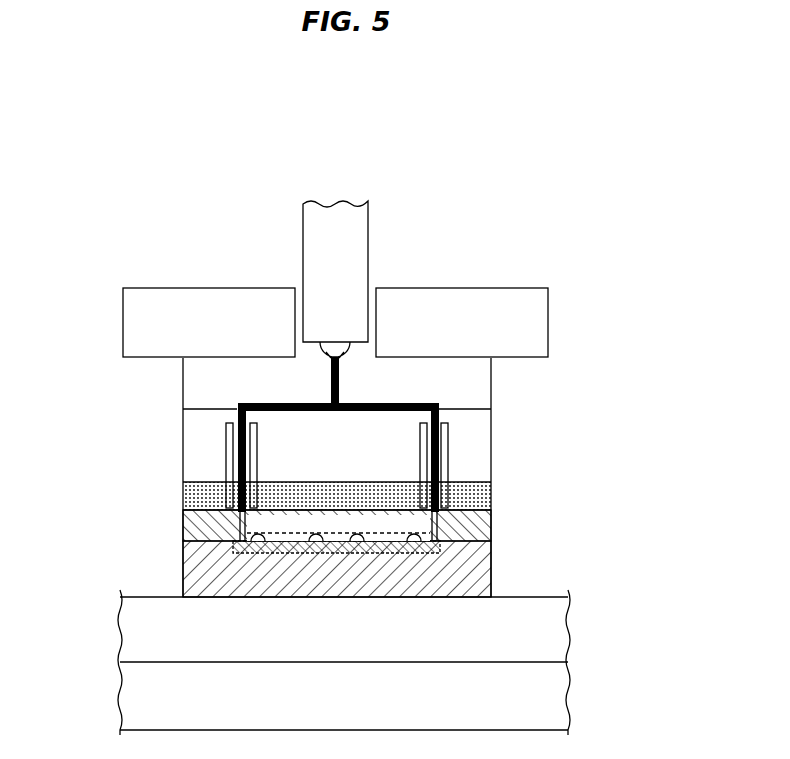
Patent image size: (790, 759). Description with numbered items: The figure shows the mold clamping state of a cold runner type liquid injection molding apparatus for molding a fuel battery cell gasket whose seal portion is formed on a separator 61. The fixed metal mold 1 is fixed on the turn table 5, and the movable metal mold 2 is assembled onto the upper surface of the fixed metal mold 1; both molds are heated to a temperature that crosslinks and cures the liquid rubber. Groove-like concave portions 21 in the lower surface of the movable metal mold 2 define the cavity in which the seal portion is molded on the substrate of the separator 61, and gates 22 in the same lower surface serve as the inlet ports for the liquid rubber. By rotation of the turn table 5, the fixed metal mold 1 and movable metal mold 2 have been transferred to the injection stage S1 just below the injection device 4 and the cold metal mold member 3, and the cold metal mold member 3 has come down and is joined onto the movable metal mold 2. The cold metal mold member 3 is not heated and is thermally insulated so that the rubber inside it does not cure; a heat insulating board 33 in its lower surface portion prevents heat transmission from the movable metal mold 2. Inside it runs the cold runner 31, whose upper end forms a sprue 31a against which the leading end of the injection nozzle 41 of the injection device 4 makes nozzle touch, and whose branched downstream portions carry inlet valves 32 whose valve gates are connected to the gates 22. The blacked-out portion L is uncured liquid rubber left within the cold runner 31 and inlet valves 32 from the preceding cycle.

The fixed metal mold 1 is at (493, 572).
The movable metal mold 2 is at (493, 522).
The cold metal mold member 3 is at (497, 399).
The injection device 4 is at (327, 213).
The turn table 5 is at (153, 635).
The concave portions 21 is at (357, 537).
The gates 22 is at (207, 530).
The cold runner 31 is at (392, 398).
The sprue 31a is at (338, 346).
The inlet valves 32 is at (228, 455).
The heat insulating board 33 is at (190, 497).
The injection nozzle 41 is at (310, 322).
The separator 61 is at (277, 560).
The liquid rubber L is at (262, 403).
The injection stage S1 is at (640, 440).